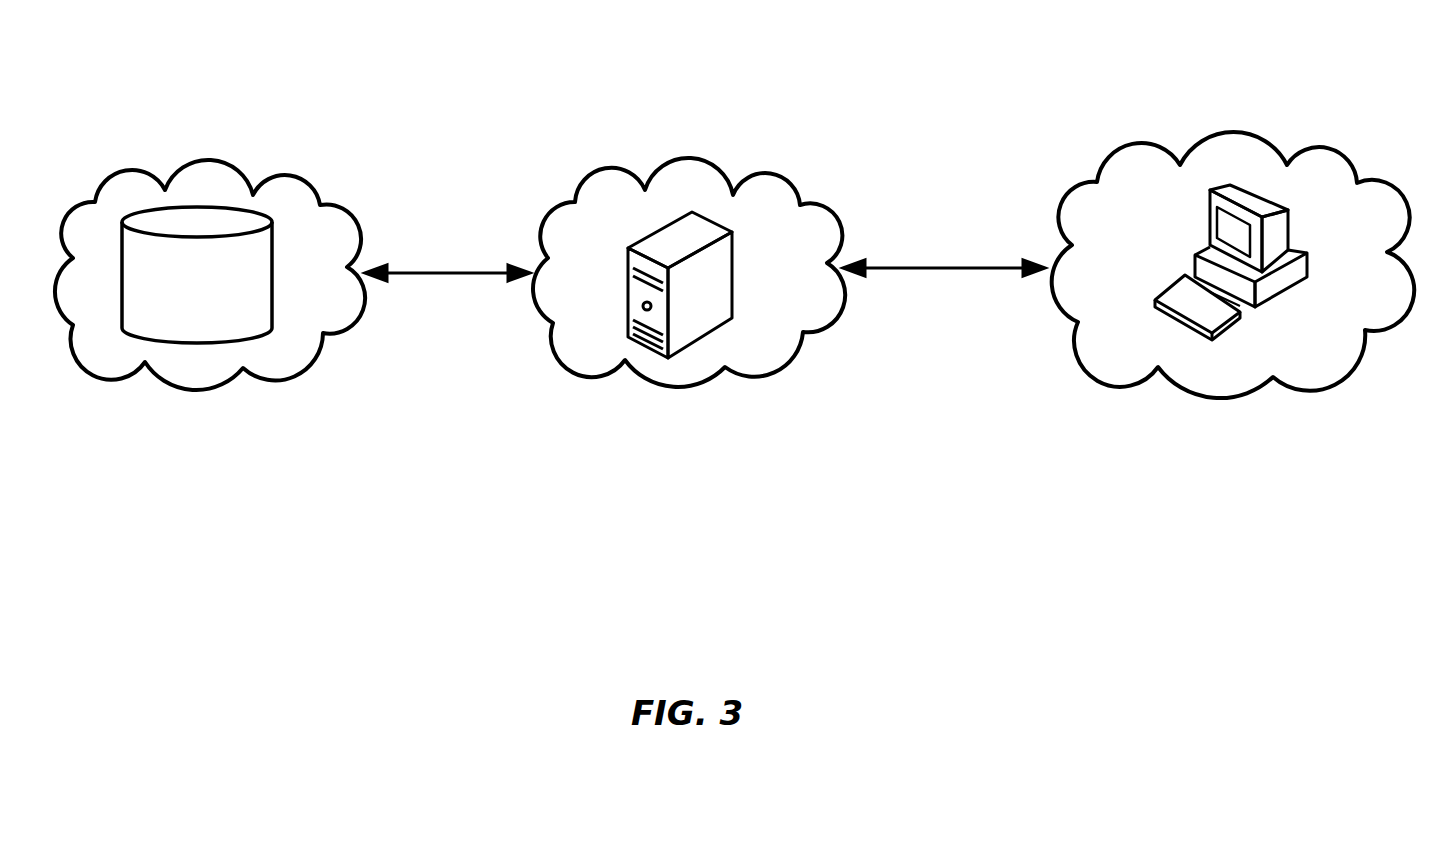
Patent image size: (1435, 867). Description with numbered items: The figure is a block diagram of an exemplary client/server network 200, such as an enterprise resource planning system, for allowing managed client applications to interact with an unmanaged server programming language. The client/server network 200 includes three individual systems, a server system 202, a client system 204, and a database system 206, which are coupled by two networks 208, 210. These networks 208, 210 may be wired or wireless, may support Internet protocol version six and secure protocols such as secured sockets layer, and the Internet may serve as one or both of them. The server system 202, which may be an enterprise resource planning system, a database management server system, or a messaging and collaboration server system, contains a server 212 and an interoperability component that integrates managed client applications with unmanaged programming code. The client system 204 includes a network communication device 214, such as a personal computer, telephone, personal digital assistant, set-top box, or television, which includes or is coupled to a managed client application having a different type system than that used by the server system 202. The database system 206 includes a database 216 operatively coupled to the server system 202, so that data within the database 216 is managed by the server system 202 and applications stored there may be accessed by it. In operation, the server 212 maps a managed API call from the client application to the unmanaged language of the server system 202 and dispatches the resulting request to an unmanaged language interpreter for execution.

The client/server network 200 is at (1027, 53).
The server system 202 is at (787, 180).
The client system 204 is at (1352, 153).
The database system 206 is at (305, 185).
The network 208 is at (947, 265).
The network 210 is at (440, 270).
The server 212 is at (737, 242).
The network communication device 214 is at (1305, 252).
The database 216 is at (273, 273).